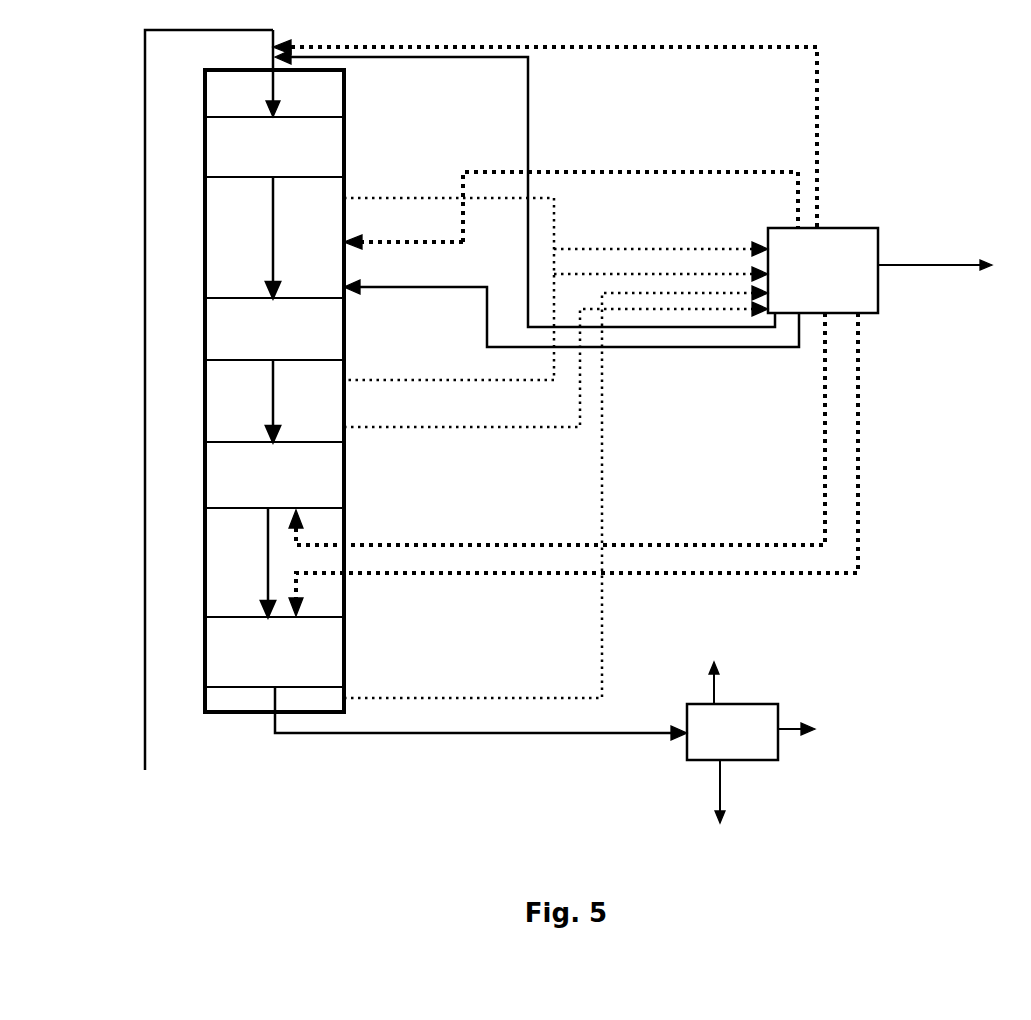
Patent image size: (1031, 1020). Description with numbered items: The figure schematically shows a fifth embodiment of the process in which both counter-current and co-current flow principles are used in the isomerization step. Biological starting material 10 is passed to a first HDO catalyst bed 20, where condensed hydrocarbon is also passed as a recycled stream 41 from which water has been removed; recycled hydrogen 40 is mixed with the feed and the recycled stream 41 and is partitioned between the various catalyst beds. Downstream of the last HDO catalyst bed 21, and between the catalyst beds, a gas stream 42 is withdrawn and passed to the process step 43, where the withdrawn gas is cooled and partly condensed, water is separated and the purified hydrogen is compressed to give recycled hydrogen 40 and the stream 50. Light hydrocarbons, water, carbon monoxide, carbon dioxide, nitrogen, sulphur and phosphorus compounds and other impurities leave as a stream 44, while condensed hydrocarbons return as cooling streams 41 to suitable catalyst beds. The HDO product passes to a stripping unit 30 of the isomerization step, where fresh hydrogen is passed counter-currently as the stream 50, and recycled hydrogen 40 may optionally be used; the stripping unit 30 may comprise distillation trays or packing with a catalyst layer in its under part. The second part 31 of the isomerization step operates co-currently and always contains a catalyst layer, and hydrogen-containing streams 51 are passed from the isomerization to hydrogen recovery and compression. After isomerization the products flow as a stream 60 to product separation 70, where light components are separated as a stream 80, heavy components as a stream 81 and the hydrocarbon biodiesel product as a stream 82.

The biological starting material 10 is at (203, 418).
The first HDO catalyst bed 20 is at (274, 147).
The last HDO catalyst bed 21 is at (274, 329).
The stripping unit 30 is at (274, 475).
The second part of the isomerization step 31 is at (274, 652).
The recycled hydrogen 40 is at (727, 58).
The recycled stream 41 is at (636, 340).
The gas stream 42 is at (568, 245).
The process step 43 is at (823, 270).
The stream 44 is at (952, 268).
The stream 50 is at (740, 535).
The streams 51 is at (588, 459).
The stream 60 is at (506, 733).
The product separation 70 is at (732, 732).
The stream 80 is at (712, 667).
The stream 81 is at (719, 809).
The stream 82 is at (814, 730).